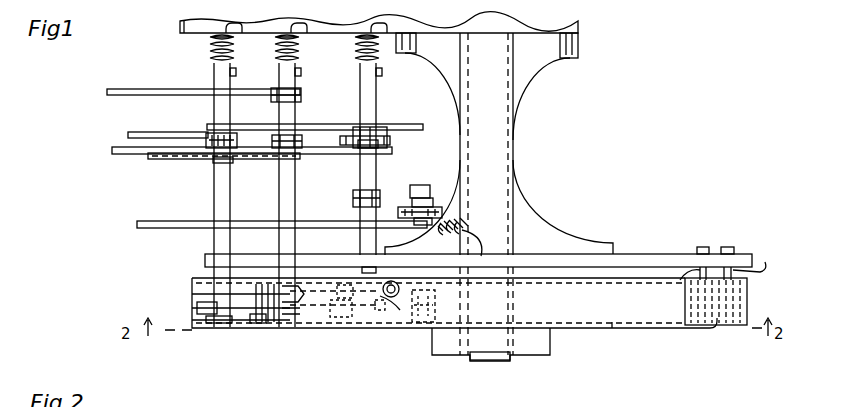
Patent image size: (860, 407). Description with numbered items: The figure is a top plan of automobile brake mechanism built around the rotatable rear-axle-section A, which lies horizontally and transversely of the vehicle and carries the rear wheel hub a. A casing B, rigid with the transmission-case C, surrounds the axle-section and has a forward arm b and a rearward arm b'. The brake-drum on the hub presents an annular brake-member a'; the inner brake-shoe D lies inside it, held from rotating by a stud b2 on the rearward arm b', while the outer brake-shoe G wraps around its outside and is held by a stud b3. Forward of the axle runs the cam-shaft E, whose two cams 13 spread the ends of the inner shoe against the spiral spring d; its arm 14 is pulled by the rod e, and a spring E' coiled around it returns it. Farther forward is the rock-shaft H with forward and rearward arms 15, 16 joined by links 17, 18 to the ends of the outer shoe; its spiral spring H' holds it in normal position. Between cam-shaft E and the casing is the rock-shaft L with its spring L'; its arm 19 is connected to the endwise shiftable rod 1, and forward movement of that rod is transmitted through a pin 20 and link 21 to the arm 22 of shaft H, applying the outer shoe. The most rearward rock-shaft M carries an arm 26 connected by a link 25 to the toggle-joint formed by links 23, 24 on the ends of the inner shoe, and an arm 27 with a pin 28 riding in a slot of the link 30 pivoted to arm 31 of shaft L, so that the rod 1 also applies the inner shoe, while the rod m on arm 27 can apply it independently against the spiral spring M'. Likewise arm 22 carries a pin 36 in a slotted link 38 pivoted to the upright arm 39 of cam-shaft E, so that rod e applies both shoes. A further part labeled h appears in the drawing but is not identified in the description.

The endwise shiftable rod 1 is at (111, 151).
The cams 13 is at (281, 290).
The upwardly extending arm 14 is at (302, 101).
The forward arm 15 is at (197, 308).
The rearward arm 16 is at (258, 326).
The link 17 is at (212, 330).
The link 18 is at (250, 306).
The upwardly projecting arm 19 is at (372, 142).
The pin 20 is at (365, 127).
The link 21 is at (425, 124).
The upwardly extending arm 22 is at (210, 130).
The toggle-joint link 23 is at (335, 292).
The toggle-joint link 24 is at (335, 318).
The link 25 is at (385, 300).
The upwardly projecting arm 26 is at (410, 324).
The upwardly projecting arm 27 is at (441, 204).
The laterally projecting pin 28 is at (420, 190).
The link 30 is at (411, 201).
The upwardly extending arm 31 is at (352, 200).
The pin 36 is at (216, 164).
The link 38 is at (151, 160).
The upright arm 39 is at (272, 141).
The rear-axle-section A is at (508, 84).
The casing B is at (514, 151).
The transmission-case C is at (186, 28).
The inner brake-shoe D is at (700, 316).
The brake-operating rock-shaft E is at (300, 195).
The spring E' is at (297, 42).
The outer brake-shoe G is at (192, 304).
The brake-operating rock-shaft H is at (208, 195).
The spiral spring H' is at (210, 44).
The rock-shaft L is at (356, 168).
The spiral spring L' is at (357, 42).
The brake-operating rock-shaft M is at (455, 236).
The spiral spring M' is at (467, 230).
The hub a is at (515, 364).
The annular brake-member a' is at (676, 349).
The forward arm b is at (452, 255).
The rearward arm b' is at (691, 254).
The stud b2 is at (698, 272).
The stud b3 is at (758, 263).
The spiral spring d is at (388, 345).
The rod e is at (141, 89).
The bar h is at (136, 133).
The endwise shiftable rod m is at (137, 225).